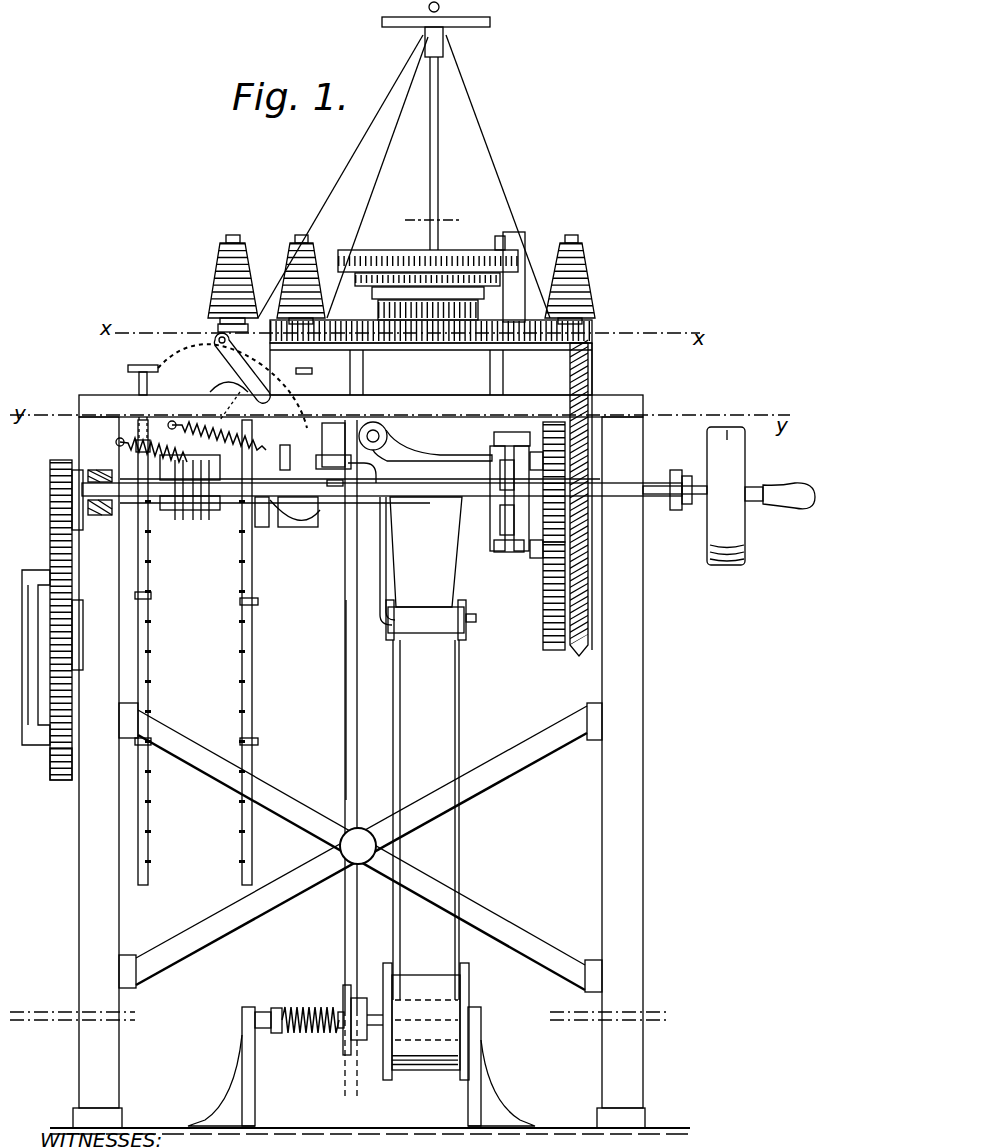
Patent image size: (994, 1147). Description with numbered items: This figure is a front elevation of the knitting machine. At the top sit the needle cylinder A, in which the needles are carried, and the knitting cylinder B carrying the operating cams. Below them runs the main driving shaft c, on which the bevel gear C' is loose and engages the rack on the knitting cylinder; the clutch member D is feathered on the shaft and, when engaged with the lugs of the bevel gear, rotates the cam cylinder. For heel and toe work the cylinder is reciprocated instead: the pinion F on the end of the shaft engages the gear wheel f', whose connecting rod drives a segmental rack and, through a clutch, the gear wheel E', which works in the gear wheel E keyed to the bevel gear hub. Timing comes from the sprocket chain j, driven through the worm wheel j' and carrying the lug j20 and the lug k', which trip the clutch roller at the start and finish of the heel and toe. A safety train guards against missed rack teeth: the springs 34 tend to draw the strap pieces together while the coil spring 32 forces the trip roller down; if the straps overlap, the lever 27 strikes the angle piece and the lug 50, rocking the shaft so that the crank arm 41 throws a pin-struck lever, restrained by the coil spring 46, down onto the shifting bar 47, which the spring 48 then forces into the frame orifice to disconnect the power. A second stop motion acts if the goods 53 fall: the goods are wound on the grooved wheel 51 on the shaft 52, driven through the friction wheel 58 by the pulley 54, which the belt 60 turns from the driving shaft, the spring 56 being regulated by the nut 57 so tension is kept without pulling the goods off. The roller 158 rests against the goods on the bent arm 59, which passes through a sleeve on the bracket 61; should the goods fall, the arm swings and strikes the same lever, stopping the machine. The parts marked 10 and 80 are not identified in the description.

The needle cylinder A is at (425, 285).
The knitting cylinder B is at (505, 290).
The coil spring 32 is at (244, 324).
The lug 50 is at (232, 386).
The crank arm 41 is at (228, 378).
The lever 27 is at (262, 395).
The springs 34 is at (311, 376).
The worm wheel j' is at (135, 390).
The coil spring 46 is at (225, 430).
The spring 48 is at (172, 456).
The pinion F is at (50, 488).
The gear wheel f' is at (46, 776).
The sprocket chain j is at (195, 652).
The lug k' is at (212, 598).
The lug j20 is at (150, 745).
The bracket 61 is at (333, 446).
The bearing arm 10 is at (430, 456).
The arm 59 is at (380, 478).
The collar 80 is at (336, 490).
The shifting bar 47 is at (446, 490).
The roller 158 is at (436, 633).
The clutch member D is at (497, 552).
The gear wheel E is at (535, 516).
The gear wheel E' is at (543, 610).
The bevel gear C' is at (583, 510).
The main driving shaft c is at (727, 567).
The goods 53 is at (455, 862).
The belt 60 is at (345, 693).
The grooved wheel 51 is at (392, 1082).
The friction wheel 58 is at (360, 990).
The shaft 52 is at (262, 1030).
The spring 56 is at (285, 1005).
The nut 57 is at (276, 1035).
The pulley 54 is at (335, 985).